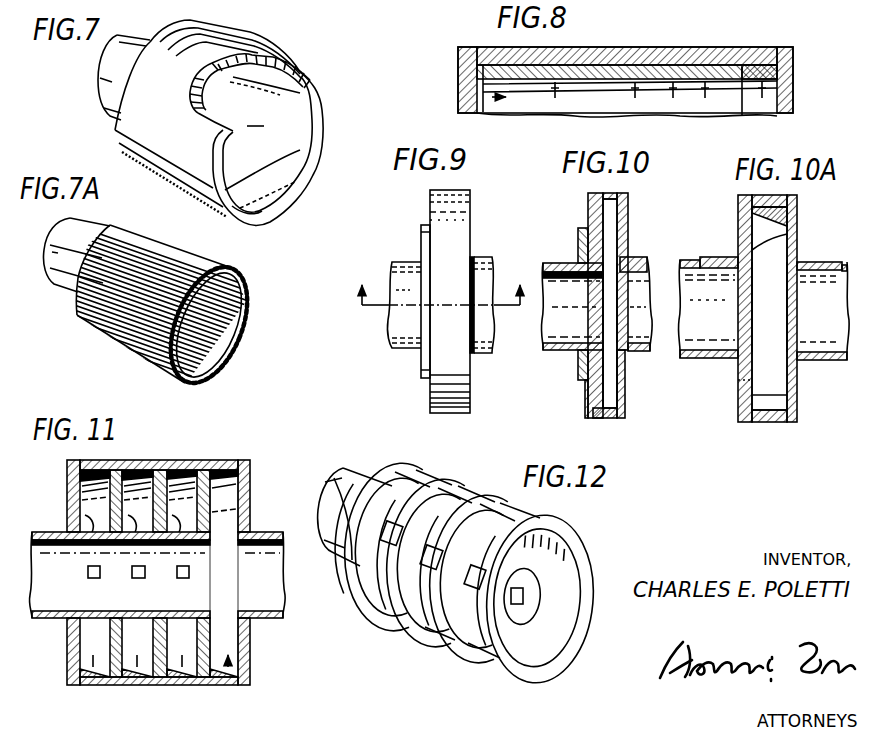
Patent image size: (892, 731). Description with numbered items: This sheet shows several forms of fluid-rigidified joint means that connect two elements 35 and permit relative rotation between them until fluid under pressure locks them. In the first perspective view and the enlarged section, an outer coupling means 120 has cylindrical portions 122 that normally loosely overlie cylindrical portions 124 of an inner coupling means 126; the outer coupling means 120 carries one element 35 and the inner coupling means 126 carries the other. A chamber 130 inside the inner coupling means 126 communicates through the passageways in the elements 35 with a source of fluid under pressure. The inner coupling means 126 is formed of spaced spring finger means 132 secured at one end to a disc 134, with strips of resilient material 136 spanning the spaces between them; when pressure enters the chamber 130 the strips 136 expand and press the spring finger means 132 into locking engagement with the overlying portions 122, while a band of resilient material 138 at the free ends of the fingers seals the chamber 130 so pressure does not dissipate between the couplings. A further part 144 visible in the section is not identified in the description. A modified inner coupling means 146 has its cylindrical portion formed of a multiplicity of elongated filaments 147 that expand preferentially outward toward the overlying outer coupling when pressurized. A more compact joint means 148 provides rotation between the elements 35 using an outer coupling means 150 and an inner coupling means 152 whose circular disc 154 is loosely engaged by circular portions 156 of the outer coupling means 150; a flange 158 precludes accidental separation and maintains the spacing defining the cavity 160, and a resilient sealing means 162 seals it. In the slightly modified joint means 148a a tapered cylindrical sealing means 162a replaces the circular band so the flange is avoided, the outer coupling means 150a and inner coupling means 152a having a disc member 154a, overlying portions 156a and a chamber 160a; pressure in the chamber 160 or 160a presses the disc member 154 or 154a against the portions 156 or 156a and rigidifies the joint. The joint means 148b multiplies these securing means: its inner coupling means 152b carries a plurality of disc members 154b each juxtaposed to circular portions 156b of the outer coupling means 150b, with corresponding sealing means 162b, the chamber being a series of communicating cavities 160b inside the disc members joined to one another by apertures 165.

In FIG. 9, the element 35 is at (402, 264).
In FIG. 10, the element 35 is at (557, 263).
In FIG. 10A, the element 35 is at (696, 355).
In FIG. 11, the element 35 is at (155, 558).
In FIG. 12, the element 35 is at (347, 487).
In FIG. 8, the outer coupling means 120 is at (616, 79).
In FIG. 8, the cylindrical portions 122 is at (618, 47).
In FIG. 7, the cylindrical portions 124 is at (226, 43).
In FIG. 7, the inner coupling means 126 is at (296, 62).
In FIG. 8, the inner coupling means 126 is at (673, 98).
In FIG. 7, the chamber 130 is at (237, 133).
In FIG. 7, the spring finger means 132 is at (282, 154).
In FIG. 8, the spring finger means 132 is at (684, 65).
In FIG. 8, the disc 134 is at (478, 111).
In FIG. 7, the strips of resilient material 136 is at (200, 46).
In FIG. 7, the band of resilient material 138 is at (316, 106).
In FIG. 8, the band of resilient material 138 is at (762, 66).
In FIG. 8, the end wall 144 is at (457, 97).
In FIG. 7A, the modified inner coupling means 146 is at (175, 309).
In FIG. 7A, the elongated filaments 147 is at (108, 313).
In FIG. 9, the joint means 148 is at (434, 298).
In FIG. 10A, the joint means 148a is at (781, 328).
In FIG. 11, the joint means 148b is at (163, 576).
In FIG. 9, the outer coupling means 150 is at (458, 211).
In FIG. 10, the outer coupling means 150 is at (607, 310).
In FIG. 10A, the outer coupling means 150a is at (801, 206).
In FIG. 11, the outer coupling means 150b is at (252, 472).
In FIG. 10, the inner coupling means 152 is at (608, 323).
In FIG. 10A, the inner coupling means 152a is at (757, 355).
In FIG. 11, the inner coupling means 152b is at (218, 612).
In FIG. 12, the inner coupling means 152b is at (484, 566).
In FIG. 10, the circular disc 154 is at (604, 236).
In FIG. 10A, the disc member 154a is at (760, 254).
In FIG. 11, the disc members 154b is at (158, 534).
In FIG. 12, the disc members 154b is at (528, 638).
In FIG. 10, the circular portions 156 is at (594, 392).
In FIG. 10A, the overlying portions 156a is at (740, 392).
In FIG. 11, the circular portions 156b is at (115, 636).
In FIG. 9, the flange 158 is at (421, 372).
In FIG. 10, the flange 158 is at (578, 355).
In FIG. 10, the cavity 160 is at (609, 370).
In FIG. 10A, the chamber 160a is at (776, 382).
In FIG. 11, the cavities 160b is at (190, 684).
In FIG. 10, the resilient sealing means 162 is at (601, 416).
In FIG. 10A, the tapered cylindrical sealing means 162a is at (776, 216).
In FIG. 11, the sealing means 162b is at (194, 466).
In FIG. 12, the sealing means 162b is at (415, 478).
In FIG. 11, the apertures 165 is at (88, 572).
In FIG. 12, the apertures 165 is at (435, 560).